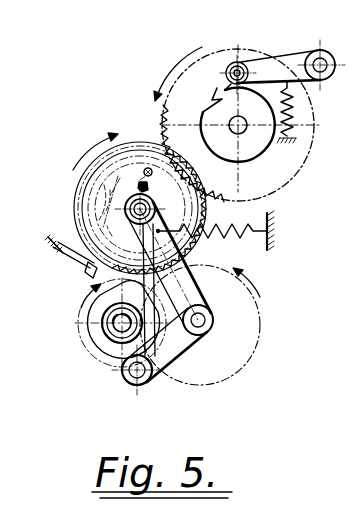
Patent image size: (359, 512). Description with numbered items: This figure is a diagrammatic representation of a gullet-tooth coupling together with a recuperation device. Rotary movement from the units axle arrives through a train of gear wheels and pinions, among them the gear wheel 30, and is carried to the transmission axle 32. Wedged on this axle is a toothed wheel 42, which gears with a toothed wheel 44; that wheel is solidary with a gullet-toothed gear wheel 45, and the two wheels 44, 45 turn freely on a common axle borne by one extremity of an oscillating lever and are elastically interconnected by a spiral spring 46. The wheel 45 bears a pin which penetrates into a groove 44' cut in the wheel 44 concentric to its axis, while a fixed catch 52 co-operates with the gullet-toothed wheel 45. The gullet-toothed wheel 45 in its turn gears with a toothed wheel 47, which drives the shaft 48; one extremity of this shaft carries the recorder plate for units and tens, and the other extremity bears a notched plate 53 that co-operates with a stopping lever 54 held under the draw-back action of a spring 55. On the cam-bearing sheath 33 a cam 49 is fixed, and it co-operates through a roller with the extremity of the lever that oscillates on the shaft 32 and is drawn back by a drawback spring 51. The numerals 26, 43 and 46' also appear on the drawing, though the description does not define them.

The shaft 26 is at (121, 340).
The gear wheel 30 is at (180, 352).
The transmission axle 32 is at (213, 318).
The cam-bearing sheath 33 is at (104, 324).
The toothed wheel 42 is at (257, 348).
The arm 43 is at (172, 209).
The toothed wheel 44 is at (140, 187).
The groove 44' is at (111, 177).
The gullet-toothed gear wheel 45 is at (83, 208).
The spiral spring 46 is at (95, 191).
The pawl pin 46' is at (169, 155).
The toothed wheel 47 is at (298, 157).
The shaft 48 is at (238, 125).
The cam 49 is at (96, 342).
The drawback spring 51 is at (228, 229).
The fixed catch 52 is at (90, 273).
The notched plate 53 is at (217, 89).
The stopping lever 54 is at (241, 67).
The spring 55 is at (293, 120).